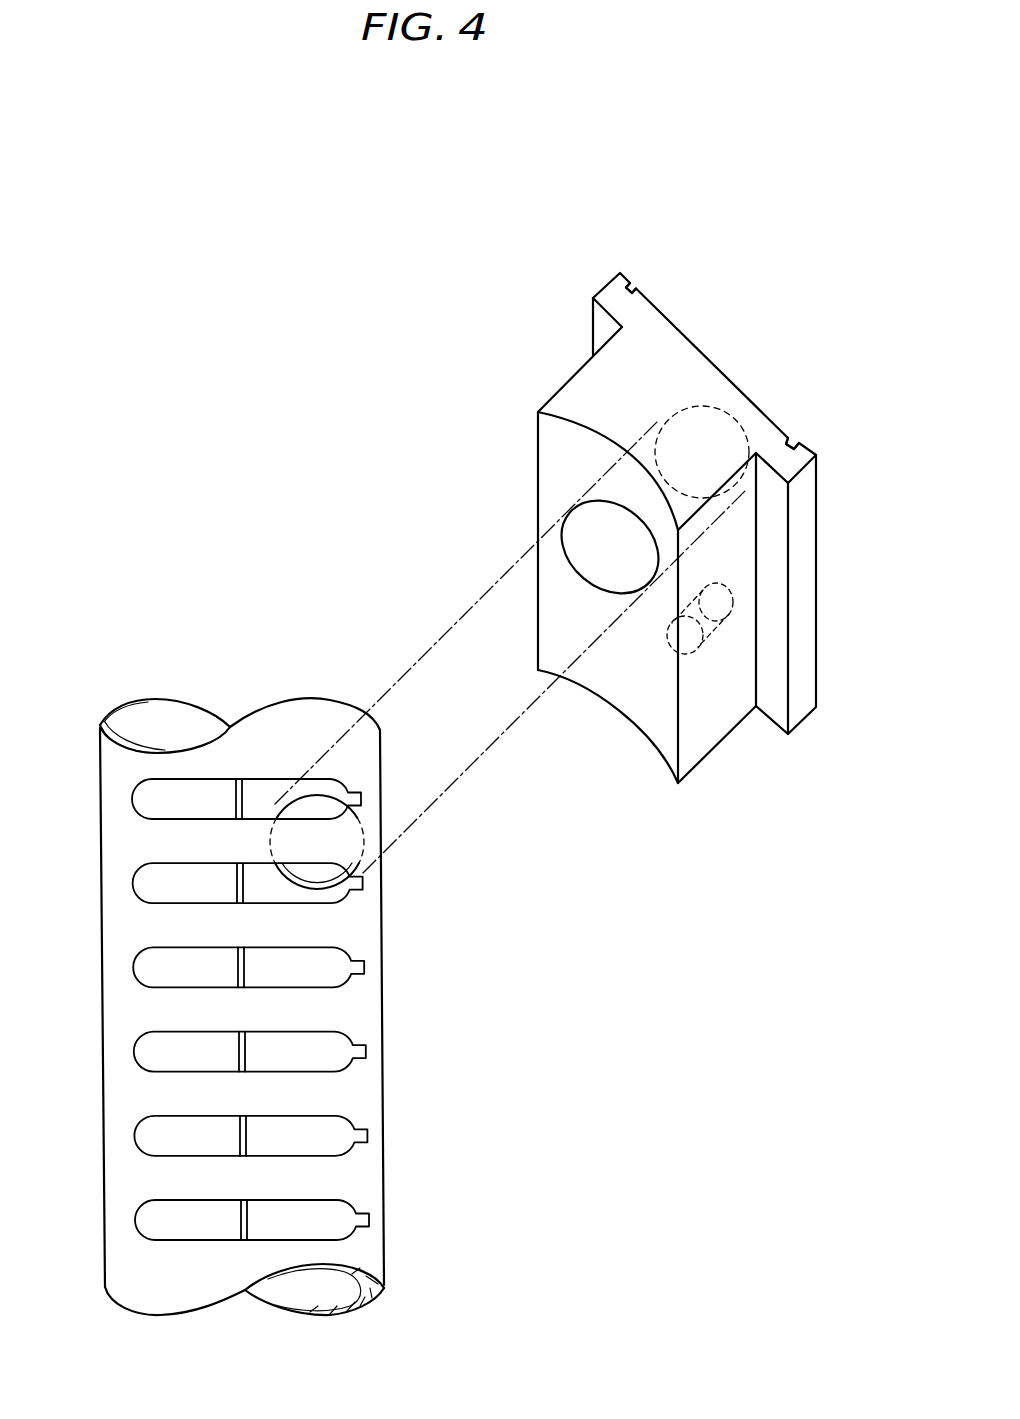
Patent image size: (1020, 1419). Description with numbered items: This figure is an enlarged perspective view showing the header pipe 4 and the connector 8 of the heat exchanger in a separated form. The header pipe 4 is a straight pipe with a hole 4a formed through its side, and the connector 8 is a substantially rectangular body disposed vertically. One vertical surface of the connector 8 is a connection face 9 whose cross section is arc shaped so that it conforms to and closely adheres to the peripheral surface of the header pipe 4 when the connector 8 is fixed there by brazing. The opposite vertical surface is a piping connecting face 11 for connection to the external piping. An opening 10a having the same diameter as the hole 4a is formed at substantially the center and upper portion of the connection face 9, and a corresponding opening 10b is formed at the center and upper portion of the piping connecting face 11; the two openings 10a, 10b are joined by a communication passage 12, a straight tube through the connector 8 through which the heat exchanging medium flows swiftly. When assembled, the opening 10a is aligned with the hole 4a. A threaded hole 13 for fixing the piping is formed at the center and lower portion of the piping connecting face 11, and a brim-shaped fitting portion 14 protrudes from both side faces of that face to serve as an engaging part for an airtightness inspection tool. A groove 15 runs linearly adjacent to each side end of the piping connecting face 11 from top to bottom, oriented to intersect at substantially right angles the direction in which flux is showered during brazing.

The header pipe 4 is at (95, 745).
The hole 4a is at (353, 832).
The connector 8 is at (584, 521).
The connection face 9 is at (602, 657).
The opening 10a is at (573, 523).
The opening 10b is at (714, 410).
The piping connecting face 11 is at (715, 358).
The communication passage 12 is at (643, 448).
The threaded hole 13 is at (728, 600).
The fitting portion 14 is at (612, 295).
The groove 15 is at (636, 290).